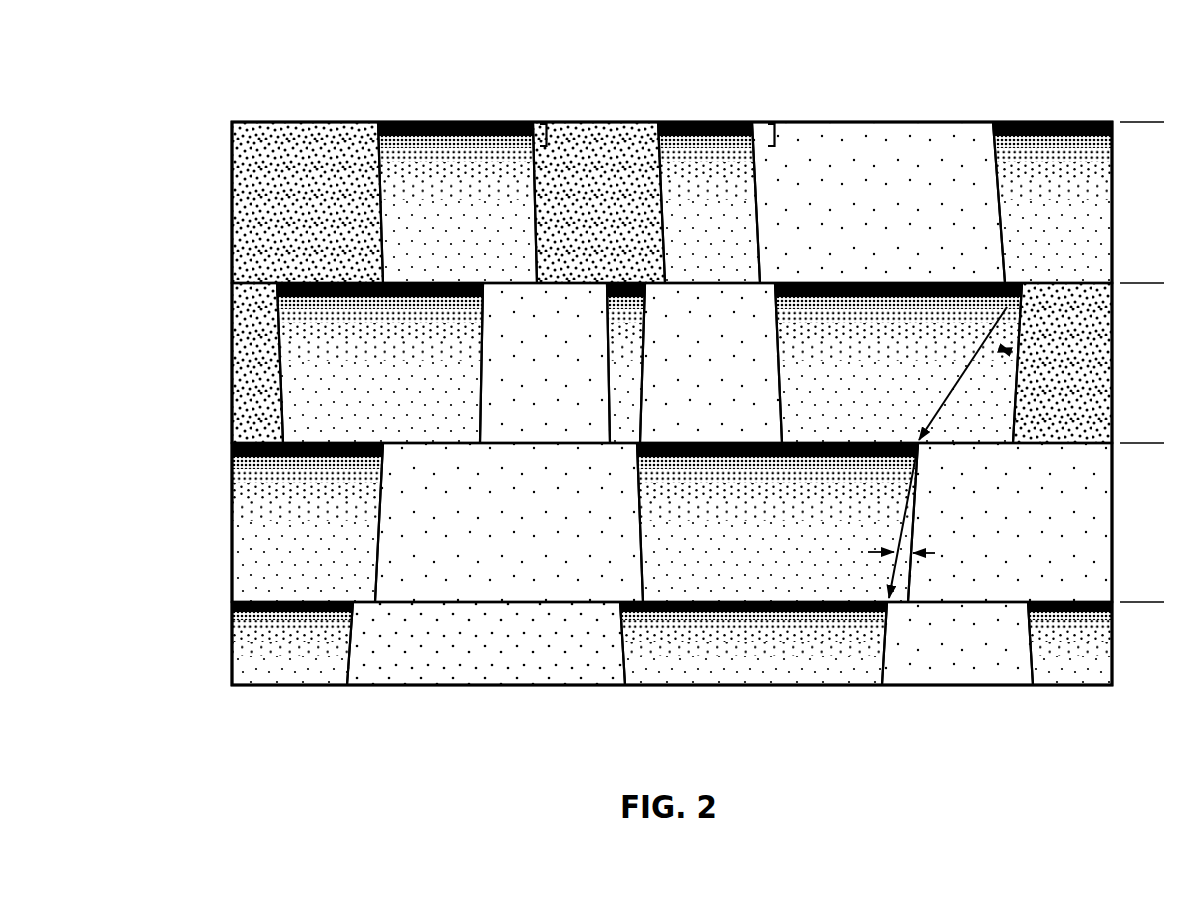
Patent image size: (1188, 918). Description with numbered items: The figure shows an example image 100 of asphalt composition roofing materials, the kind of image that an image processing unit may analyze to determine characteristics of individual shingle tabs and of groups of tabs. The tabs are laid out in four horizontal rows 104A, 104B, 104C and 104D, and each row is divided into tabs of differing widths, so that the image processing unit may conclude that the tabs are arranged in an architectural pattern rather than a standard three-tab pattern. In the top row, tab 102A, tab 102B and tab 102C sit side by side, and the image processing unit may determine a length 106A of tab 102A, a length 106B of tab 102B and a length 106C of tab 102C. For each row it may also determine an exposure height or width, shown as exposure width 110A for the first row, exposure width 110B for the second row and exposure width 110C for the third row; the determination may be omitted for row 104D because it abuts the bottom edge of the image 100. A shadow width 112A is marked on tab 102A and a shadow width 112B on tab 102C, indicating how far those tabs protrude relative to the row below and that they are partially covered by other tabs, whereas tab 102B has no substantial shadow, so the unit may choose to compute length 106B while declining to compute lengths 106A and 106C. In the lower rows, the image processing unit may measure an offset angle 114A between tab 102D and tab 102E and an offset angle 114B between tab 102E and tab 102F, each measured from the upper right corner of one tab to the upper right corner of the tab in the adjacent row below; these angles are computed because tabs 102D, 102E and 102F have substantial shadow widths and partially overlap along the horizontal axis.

The image 100 is at (751, 22).
The shingle tab 102A is at (462, 180).
The shingle tab 102B is at (628, 168).
The shingle tab 102C is at (736, 213).
The shingle tab 102D is at (822, 408).
The shingle tab 102E is at (666, 555).
The shingle tab 102F is at (646, 659).
The row 104A is at (594, 177).
The row 104B is at (594, 352).
The row 104C is at (594, 513).
The row 104D is at (594, 644).
The length 106A is at (532, 250).
The length 106B is at (661, 250).
The length 106C is at (757, 250).
The exposure width 110A is at (1150, 124).
The exposure width 110B is at (1150, 285).
The exposure width 110C is at (1150, 445).
The shadow width 112A is at (548, 135).
The shadow width 112B is at (776, 135).
The offset angle 114A is at (996, 358).
The offset angle 114B is at (898, 560).